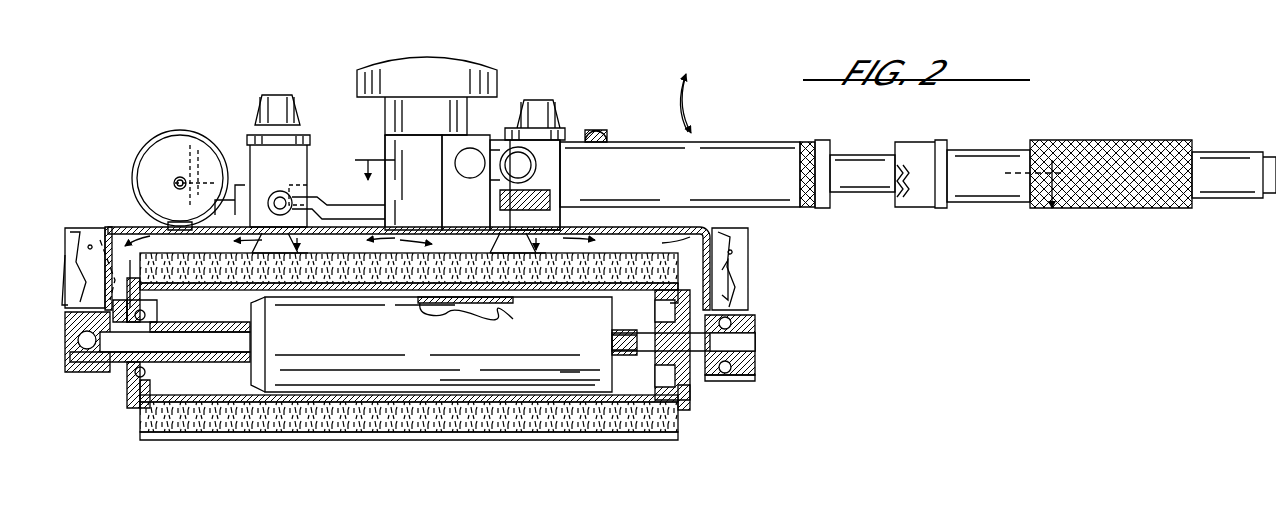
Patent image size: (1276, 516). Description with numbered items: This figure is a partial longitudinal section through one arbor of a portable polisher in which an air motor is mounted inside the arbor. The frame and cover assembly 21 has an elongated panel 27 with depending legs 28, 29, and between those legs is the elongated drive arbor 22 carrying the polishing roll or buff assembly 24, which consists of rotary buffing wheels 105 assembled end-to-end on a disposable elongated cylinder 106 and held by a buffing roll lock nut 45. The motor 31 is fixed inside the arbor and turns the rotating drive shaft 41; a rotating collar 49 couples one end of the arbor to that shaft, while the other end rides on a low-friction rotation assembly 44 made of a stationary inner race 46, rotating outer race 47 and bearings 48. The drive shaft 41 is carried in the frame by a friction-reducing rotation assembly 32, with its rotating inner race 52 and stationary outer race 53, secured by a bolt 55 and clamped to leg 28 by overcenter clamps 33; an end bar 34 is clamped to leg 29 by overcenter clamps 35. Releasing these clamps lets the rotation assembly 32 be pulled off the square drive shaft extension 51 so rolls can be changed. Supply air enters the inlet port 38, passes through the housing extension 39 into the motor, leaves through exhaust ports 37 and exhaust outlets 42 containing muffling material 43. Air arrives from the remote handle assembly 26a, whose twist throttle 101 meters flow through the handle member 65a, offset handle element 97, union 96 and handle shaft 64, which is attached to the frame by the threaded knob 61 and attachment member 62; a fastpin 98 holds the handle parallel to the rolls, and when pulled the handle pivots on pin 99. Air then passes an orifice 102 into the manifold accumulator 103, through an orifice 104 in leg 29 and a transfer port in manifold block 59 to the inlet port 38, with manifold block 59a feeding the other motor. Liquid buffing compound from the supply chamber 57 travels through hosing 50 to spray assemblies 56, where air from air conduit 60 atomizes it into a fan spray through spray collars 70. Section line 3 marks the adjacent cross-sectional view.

The section line 3 is at (710, 185).
The frame and cover assembly 21 is at (662, 236).
The elongated drive arbor 22 is at (605, 384).
The polishing roll or buff assembly 24 is at (679, 432).
The remote handle assembly 26a is at (742, 140).
The elongated panel 27 is at (148, 228).
The depending leg 28 is at (704, 230).
The depending leg 29 is at (112, 248).
The motor 31 is at (346, 344).
The friction-reducing rotation assembly 32 is at (750, 378).
The overcenter clamp 33 is at (730, 280).
The end bar 34 is at (70, 362).
The overcenter clamp 35 is at (68, 240).
The exhaust port 37 is at (512, 302).
The inlet port 38 is at (88, 350).
The extension of stationary motor housing 39 is at (122, 359).
The rotating drive shaft 41 is at (634, 357).
The exhaust outlet 42 is at (690, 376).
The muffling material 43 is at (655, 312).
The low-friction rotation assembly 44 is at (130, 380).
The buffing roll lock nut 45 is at (132, 408).
The stationary inner race 46 is at (154, 335).
The rotating outer race 47 is at (156, 306).
The bearings 48 is at (145, 314).
The rotating collar 49 is at (690, 398).
The hosing 50 is at (245, 180).
The drive shaft extension 51 is at (676, 286).
The rotating inner race 52 is at (753, 362).
The stationary outer race 53 is at (744, 322).
The bolt 55 is at (760, 344).
The spray assembly 56 is at (294, 148).
The supply chamber 57 is at (193, 170).
The manifold block 59 is at (98, 228).
The manifold block 59a is at (748, 243).
The air conduit 60 is at (308, 185).
The threaded knob 61 is at (360, 65).
The attachment member 62 is at (387, 140).
The handle shaft 64 is at (666, 172).
The handle member 65a is at (996, 186).
The spray collar 70 is at (320, 244).
The union 96 is at (806, 150).
The offset handle element 97 is at (860, 164).
The fastpin 98 is at (505, 150).
The pin 99 is at (456, 160).
The twist throttle 101 is at (1103, 147).
The orifice 102 is at (410, 226).
The manifold accumulator 103 is at (380, 244).
The orifice 104 is at (128, 246).
The transfer port / rotary buffing wheel 105 is at (192, 430).
The disposable elongated cylinder 106 is at (250, 430).